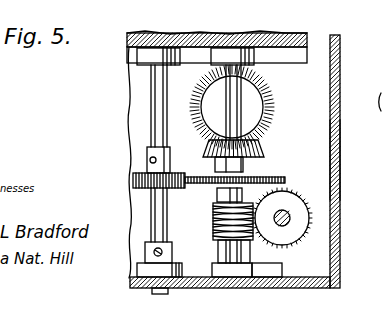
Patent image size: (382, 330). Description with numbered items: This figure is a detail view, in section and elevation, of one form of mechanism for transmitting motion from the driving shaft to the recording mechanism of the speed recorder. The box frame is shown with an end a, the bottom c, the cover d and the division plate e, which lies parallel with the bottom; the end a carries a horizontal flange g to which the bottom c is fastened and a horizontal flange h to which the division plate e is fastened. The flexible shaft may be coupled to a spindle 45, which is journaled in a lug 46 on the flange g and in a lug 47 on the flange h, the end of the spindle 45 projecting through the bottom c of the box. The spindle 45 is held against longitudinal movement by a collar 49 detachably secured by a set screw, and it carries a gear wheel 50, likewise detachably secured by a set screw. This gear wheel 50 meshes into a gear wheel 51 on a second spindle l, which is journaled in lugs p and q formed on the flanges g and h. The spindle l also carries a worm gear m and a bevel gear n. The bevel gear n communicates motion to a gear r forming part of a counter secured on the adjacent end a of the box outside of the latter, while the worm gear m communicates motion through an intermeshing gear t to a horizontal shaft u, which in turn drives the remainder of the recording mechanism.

The spindle 45 is at (155, 117).
The lug 46 is at (131, 182).
The lug 47 is at (137, 55).
The collar 49 is at (172, 256).
The gear wheel 50 is at (135, 178).
The gear wheel 51 is at (284, 178).
The end a is at (327, 47).
The bottom c is at (305, 283).
The cover d is at (341, 148).
The division plate e is at (294, 38).
The horizontal flange h is at (192, 53).
The lug q is at (252, 60).
The spindle l is at (243, 108).
The gear r is at (272, 112).
The bevel gear n is at (263, 149).
The worm gear m is at (214, 222).
The lug p is at (253, 270).
The horizontal flange g is at (284, 270).
The horizontal shaft u is at (286, 212).
The gear t is at (287, 219).